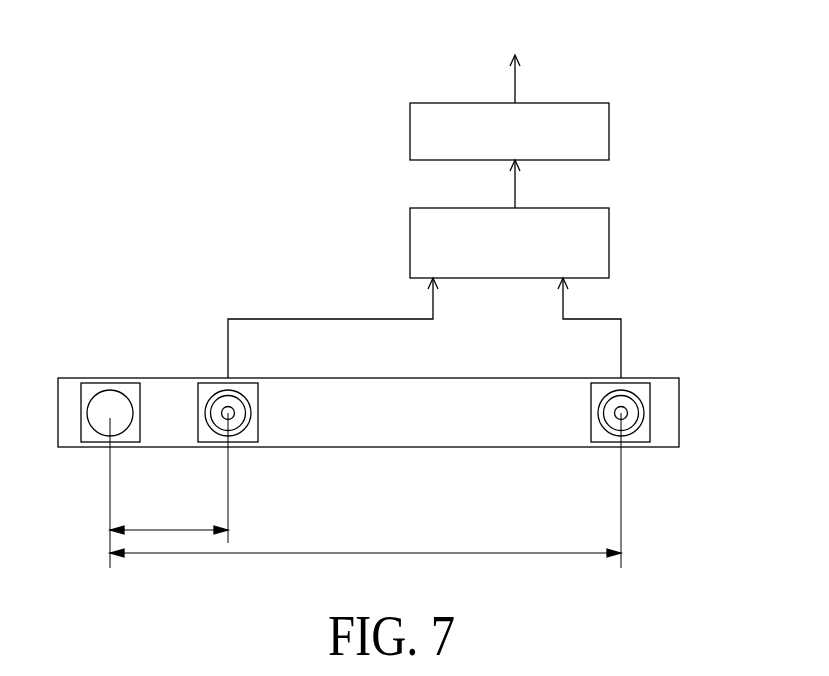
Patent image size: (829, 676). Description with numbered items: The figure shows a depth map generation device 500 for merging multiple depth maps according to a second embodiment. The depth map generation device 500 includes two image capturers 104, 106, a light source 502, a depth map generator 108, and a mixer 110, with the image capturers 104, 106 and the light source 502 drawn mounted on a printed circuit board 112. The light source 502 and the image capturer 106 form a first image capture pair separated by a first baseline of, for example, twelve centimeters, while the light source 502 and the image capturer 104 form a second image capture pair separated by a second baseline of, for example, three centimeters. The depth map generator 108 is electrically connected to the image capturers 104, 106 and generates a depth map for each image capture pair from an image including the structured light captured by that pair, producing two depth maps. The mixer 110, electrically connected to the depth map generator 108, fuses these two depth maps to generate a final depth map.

The depth map generation device 500 is at (182, 130).
The mixer 110 is at (609, 135).
The depth map generator 108 is at (609, 230).
The printed circuit board 112 is at (679, 417).
The light source 502 is at (85, 447).
The image capturer 104 is at (240, 447).
The image capturer 106 is at (643, 447).